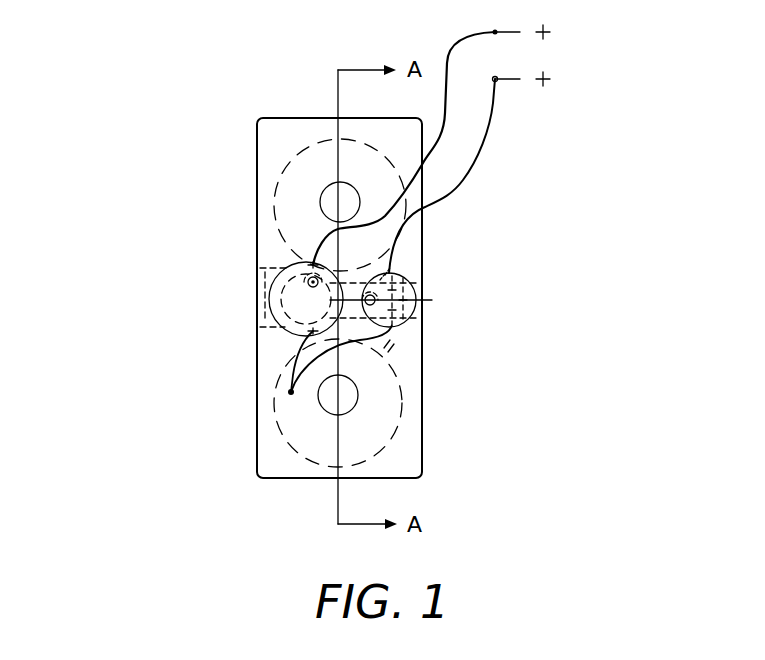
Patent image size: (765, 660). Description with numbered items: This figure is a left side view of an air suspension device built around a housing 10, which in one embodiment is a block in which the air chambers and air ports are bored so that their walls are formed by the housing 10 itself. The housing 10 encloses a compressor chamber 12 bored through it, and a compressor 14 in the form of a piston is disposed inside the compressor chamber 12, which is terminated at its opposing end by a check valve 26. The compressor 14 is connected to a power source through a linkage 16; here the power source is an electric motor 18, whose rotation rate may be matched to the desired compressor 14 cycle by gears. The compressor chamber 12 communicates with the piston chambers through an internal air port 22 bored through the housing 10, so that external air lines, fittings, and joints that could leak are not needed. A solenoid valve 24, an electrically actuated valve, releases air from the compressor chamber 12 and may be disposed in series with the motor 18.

The housing 10 is at (246, 272).
The compressor chamber 12 is at (414, 272).
The compressor 14 is at (420, 288).
The linkage 16 is at (346, 318).
The electric motor 18 is at (298, 306).
The internal air port 22 is at (412, 256).
The solenoid valve 24 is at (359, 256).
The check valve 26 is at (436, 303).